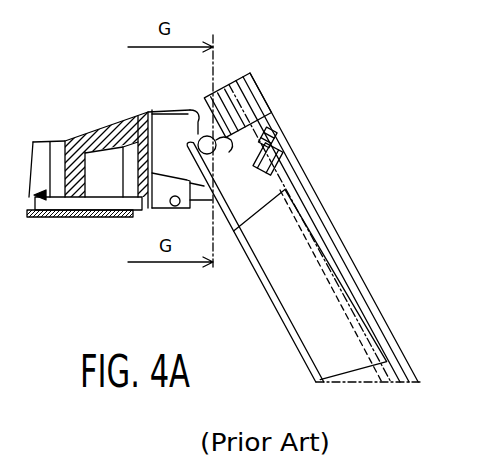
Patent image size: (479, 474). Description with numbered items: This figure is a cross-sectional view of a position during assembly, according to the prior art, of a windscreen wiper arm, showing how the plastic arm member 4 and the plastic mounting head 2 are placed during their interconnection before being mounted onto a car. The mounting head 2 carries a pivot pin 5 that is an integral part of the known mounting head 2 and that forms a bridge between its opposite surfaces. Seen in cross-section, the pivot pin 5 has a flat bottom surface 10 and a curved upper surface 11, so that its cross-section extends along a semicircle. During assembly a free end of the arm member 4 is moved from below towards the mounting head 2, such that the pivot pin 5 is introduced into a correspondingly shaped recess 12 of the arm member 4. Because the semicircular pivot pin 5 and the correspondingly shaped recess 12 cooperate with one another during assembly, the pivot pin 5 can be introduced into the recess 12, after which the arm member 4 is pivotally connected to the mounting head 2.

The mounting head 2 is at (81, 138).
The arm member 4 is at (316, 204).
The pivot pin 5 is at (230, 118).
The flat bottom surface 10 is at (232, 184).
The curved upper surface 11 is at (197, 121).
The recess 12 is at (230, 142).